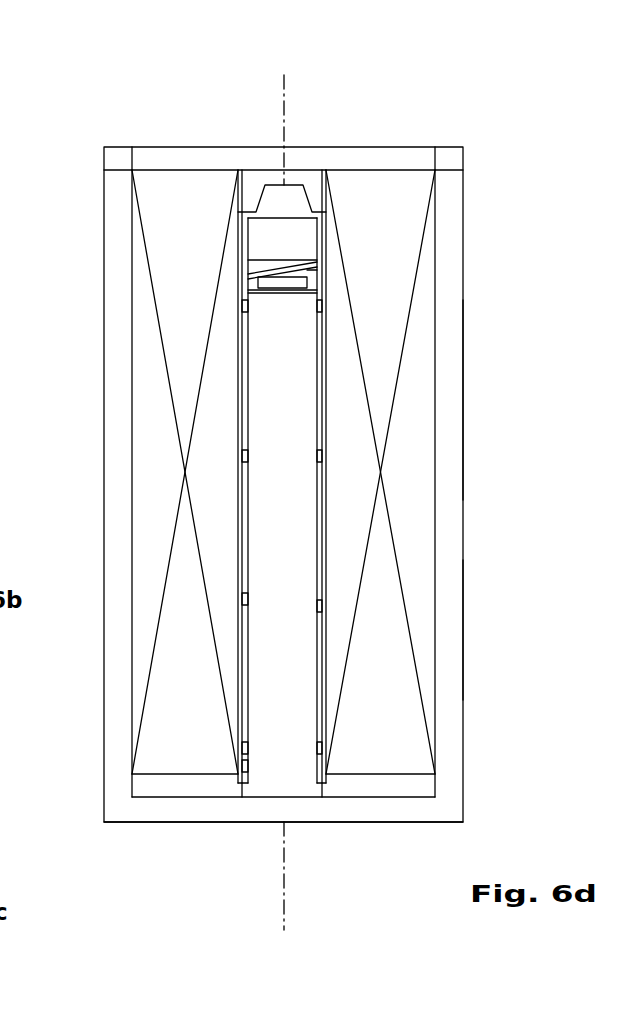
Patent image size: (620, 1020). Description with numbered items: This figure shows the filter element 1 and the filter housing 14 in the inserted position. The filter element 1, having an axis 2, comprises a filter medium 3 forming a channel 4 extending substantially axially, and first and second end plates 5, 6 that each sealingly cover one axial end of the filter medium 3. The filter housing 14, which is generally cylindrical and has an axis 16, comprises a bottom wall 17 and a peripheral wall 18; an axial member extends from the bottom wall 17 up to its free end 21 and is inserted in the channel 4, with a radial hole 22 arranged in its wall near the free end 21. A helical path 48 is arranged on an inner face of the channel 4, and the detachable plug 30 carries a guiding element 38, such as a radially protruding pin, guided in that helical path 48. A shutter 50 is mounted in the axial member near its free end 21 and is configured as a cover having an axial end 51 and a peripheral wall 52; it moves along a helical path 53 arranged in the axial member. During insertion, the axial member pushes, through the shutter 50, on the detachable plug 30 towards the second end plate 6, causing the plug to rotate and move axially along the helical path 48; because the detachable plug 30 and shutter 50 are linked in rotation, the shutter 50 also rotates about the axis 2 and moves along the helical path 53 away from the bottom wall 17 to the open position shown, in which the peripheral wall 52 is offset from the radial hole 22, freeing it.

The filter element 1 is at (441, 545).
The axis 2 is at (215, 502).
The filter medium 3 is at (393, 688).
The channel 4 is at (240, 390).
The first end plate 5 is at (415, 785).
The second end plate 6 is at (175, 165).
The filter housing 14 is at (470, 628).
The axis 16 is at (284, 908).
The bottom wall 17 is at (403, 803).
The peripheral wall 18 is at (445, 405).
The free end 21 is at (325, 221).
The radial hole 22 is at (302, 278).
The detachable plug 30 is at (266, 205).
The guiding element 38 is at (320, 210).
The helical path 48 is at (322, 229).
The shutter 50 is at (160, 234).
The axial end 51 is at (293, 262).
The peripheral wall 52 is at (262, 262).
The helical path 53 is at (265, 229).